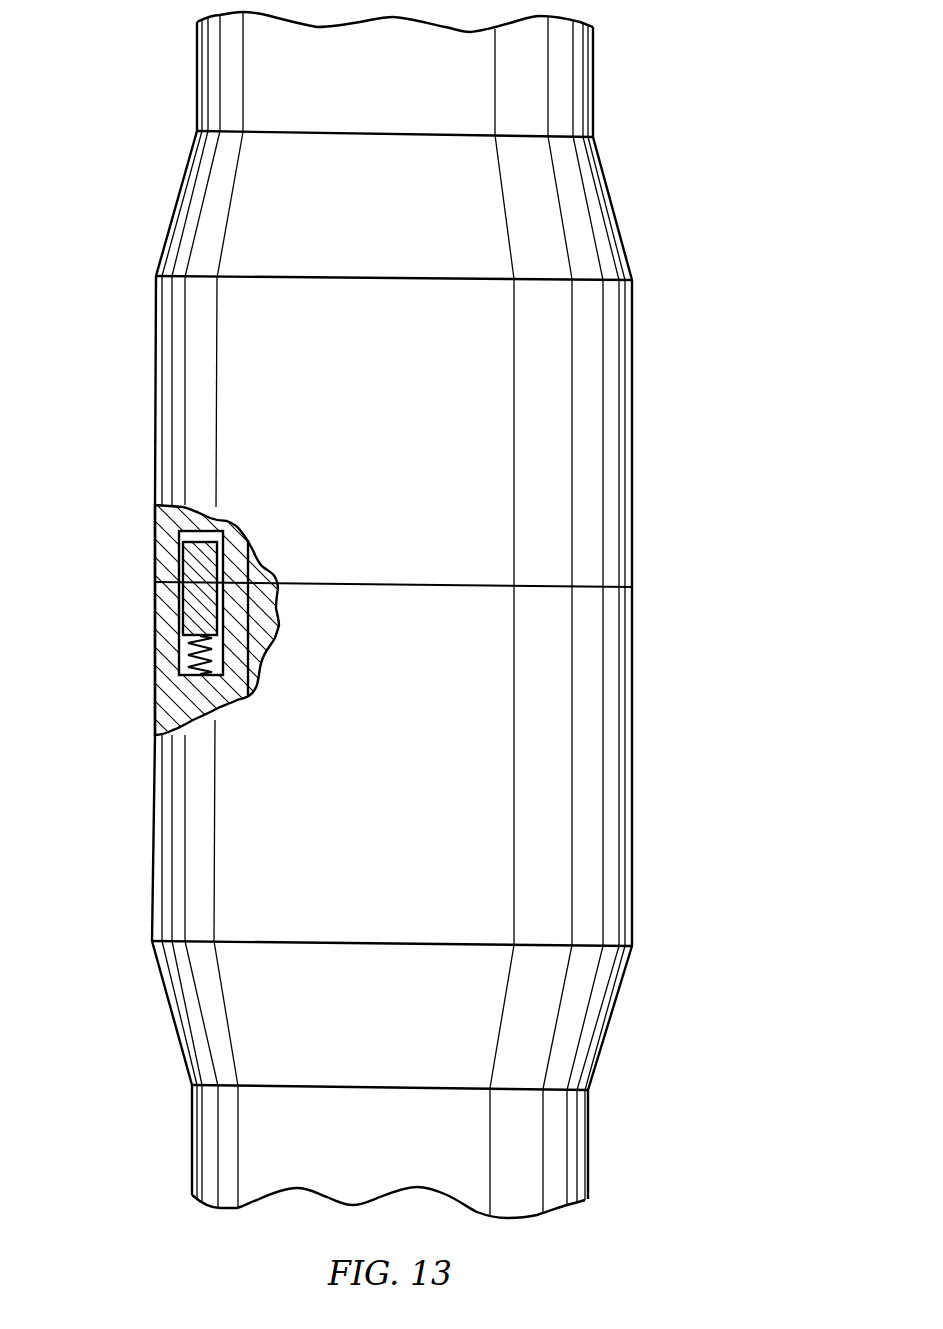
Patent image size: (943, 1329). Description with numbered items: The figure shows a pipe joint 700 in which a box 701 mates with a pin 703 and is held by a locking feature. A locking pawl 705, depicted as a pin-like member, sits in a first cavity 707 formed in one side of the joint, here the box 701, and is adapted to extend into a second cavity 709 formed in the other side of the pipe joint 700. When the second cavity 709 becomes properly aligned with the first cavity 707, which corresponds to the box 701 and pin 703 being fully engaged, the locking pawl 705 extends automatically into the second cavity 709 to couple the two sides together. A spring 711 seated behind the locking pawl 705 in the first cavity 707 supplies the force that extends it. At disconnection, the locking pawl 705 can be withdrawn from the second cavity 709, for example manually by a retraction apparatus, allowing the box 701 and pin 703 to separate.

The pipe joint 700 is at (392, 615).
The box 701 is at (633, 695).
The pin 703 is at (633, 397).
The locking pawl 705 is at (182, 592).
The first cavity 707 is at (182, 642).
The second cavity 709 is at (190, 534).
The spring 711 is at (182, 661).